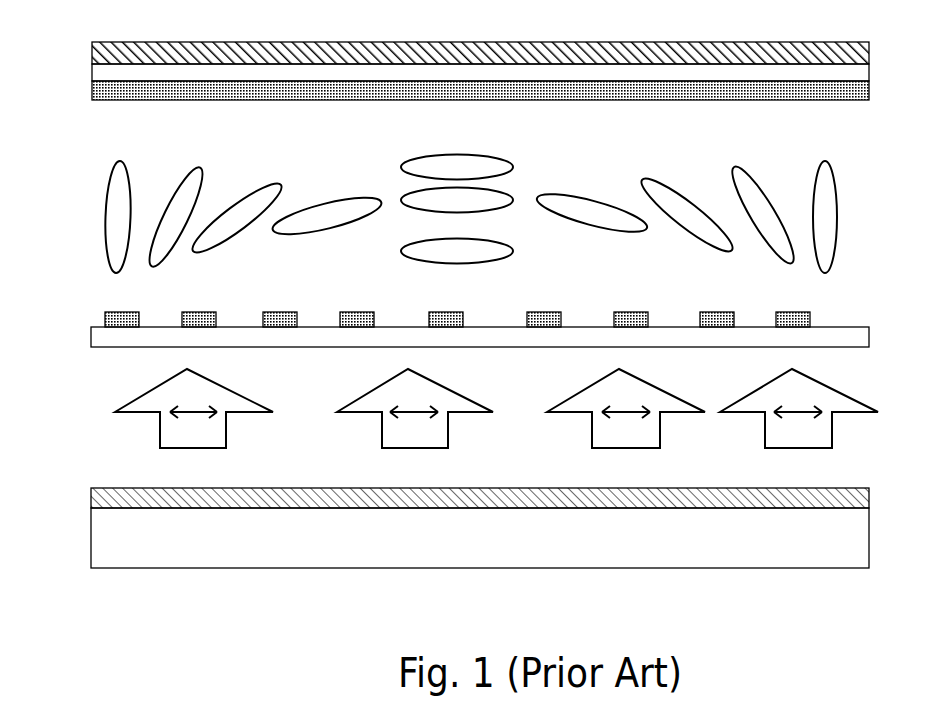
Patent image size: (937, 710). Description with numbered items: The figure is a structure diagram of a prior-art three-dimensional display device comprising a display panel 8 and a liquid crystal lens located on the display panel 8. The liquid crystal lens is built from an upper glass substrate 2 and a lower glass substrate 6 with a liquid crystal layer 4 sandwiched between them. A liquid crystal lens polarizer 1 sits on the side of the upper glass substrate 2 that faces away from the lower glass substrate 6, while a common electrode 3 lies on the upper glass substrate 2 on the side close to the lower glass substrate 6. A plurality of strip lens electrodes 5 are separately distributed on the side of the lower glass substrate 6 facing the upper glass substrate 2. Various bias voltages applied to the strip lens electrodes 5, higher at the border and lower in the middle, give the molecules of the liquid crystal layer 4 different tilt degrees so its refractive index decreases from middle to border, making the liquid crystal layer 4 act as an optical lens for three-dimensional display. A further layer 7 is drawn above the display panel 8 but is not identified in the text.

The liquid crystal lens polarizer 1 is at (100, 52).
The upper glass substrate 2 is at (98, 73).
The common electrode 3 is at (100, 92).
The liquid crystal layer 4 is at (113, 198).
The strip lens electrodes 5 is at (115, 314).
The lower glass substrate 6 is at (100, 342).
The lower polarizer 7 is at (100, 497).
The display panel 8 is at (109, 563).